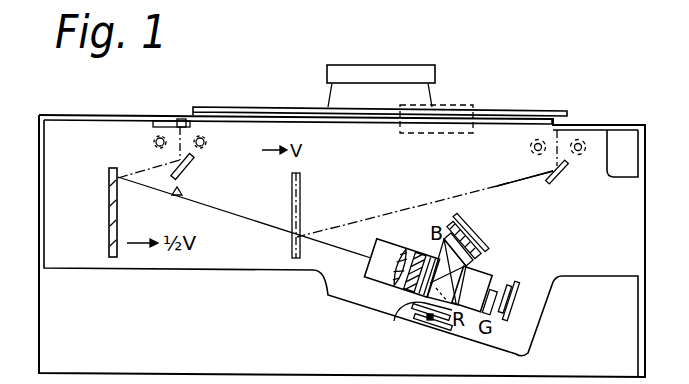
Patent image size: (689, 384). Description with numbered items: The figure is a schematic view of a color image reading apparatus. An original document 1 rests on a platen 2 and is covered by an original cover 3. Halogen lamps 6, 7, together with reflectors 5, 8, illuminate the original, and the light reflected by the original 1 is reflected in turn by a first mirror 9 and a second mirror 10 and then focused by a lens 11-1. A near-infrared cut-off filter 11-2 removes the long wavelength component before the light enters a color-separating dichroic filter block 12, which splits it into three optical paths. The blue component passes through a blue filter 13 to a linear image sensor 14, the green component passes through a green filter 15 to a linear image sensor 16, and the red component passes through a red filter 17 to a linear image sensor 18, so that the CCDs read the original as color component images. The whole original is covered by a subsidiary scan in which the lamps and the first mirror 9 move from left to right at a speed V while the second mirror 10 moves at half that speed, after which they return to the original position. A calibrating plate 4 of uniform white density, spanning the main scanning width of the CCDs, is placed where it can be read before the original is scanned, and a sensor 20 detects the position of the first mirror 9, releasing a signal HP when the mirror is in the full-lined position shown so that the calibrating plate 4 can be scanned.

The original document 1 is at (518, 114).
The platen 2 is at (553, 118).
The original cover 3 is at (247, 107).
The calibrating plate 4 is at (163, 117).
The reflector 5 is at (154, 144).
The halogen lamp 6 is at (204, 144).
The halogen lamp 7 is at (158, 147).
The reflector 8 is at (205, 146).
The first mirror 9 is at (187, 171).
The second mirror 10 is at (109, 181).
The lens 11-1 is at (372, 275).
The near-infrared cut-off filter 11-2 is at (418, 250).
The color-separating dichroic filter block 12 is at (493, 267).
The blue filter 13 is at (450, 196).
The linear image sensor 14 is at (475, 224).
The green filter 15 is at (508, 281).
The linear image sensor 16 is at (518, 308).
The red filter 17 is at (402, 311).
The linear image sensor 18 is at (440, 330).
The sensor 20 is at (184, 193).